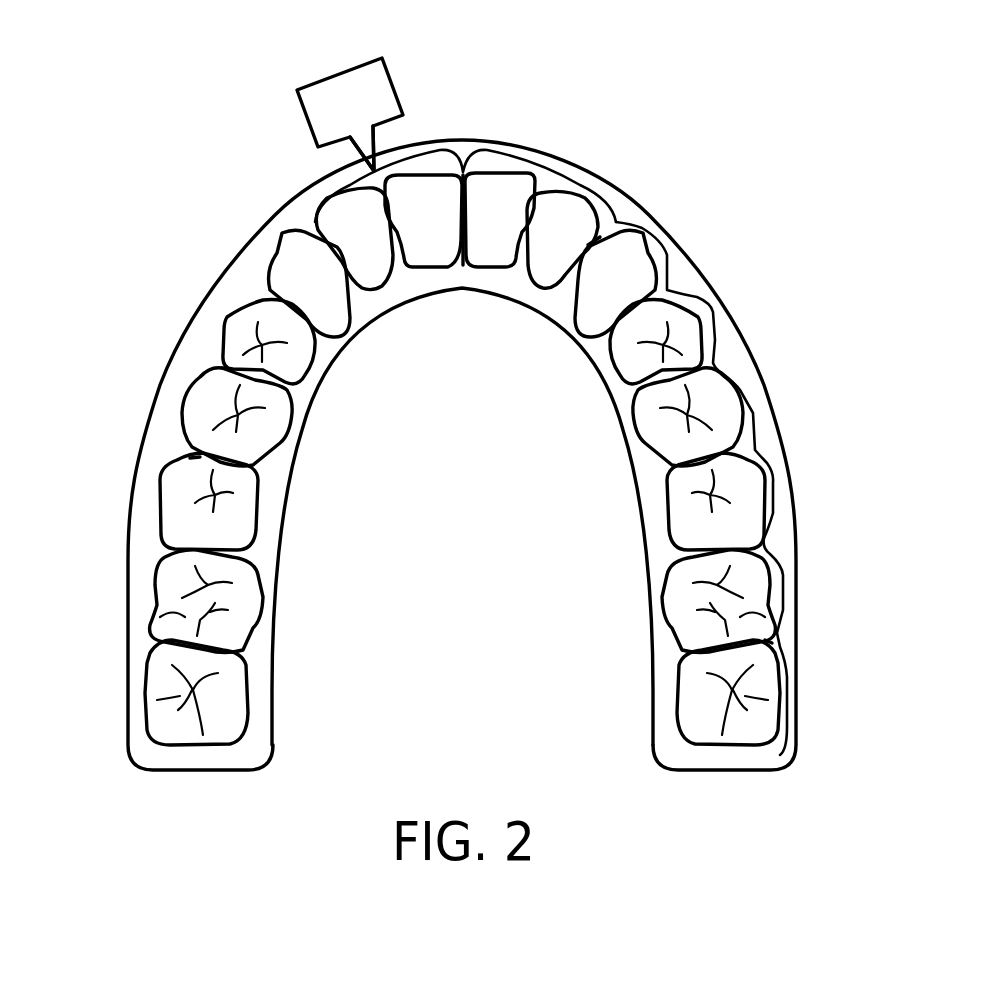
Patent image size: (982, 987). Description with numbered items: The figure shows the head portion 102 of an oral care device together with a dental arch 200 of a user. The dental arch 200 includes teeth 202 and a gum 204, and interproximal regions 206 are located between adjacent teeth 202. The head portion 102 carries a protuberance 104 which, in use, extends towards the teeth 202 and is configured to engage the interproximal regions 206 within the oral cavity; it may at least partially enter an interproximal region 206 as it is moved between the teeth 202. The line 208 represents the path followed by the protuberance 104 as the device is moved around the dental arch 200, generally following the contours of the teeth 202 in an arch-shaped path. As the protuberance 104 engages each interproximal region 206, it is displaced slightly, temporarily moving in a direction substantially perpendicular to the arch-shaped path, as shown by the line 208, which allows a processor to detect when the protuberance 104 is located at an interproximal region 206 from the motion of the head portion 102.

The head portion 102 is at (335, 73).
The protuberance 104 is at (360, 155).
The dental arch 200 is at (158, 308).
The teeth 202 is at (172, 613).
The gum 204 is at (275, 720).
The interproximal regions 206 is at (462, 165).
The line (arch-shaped path) 208 is at (697, 293).